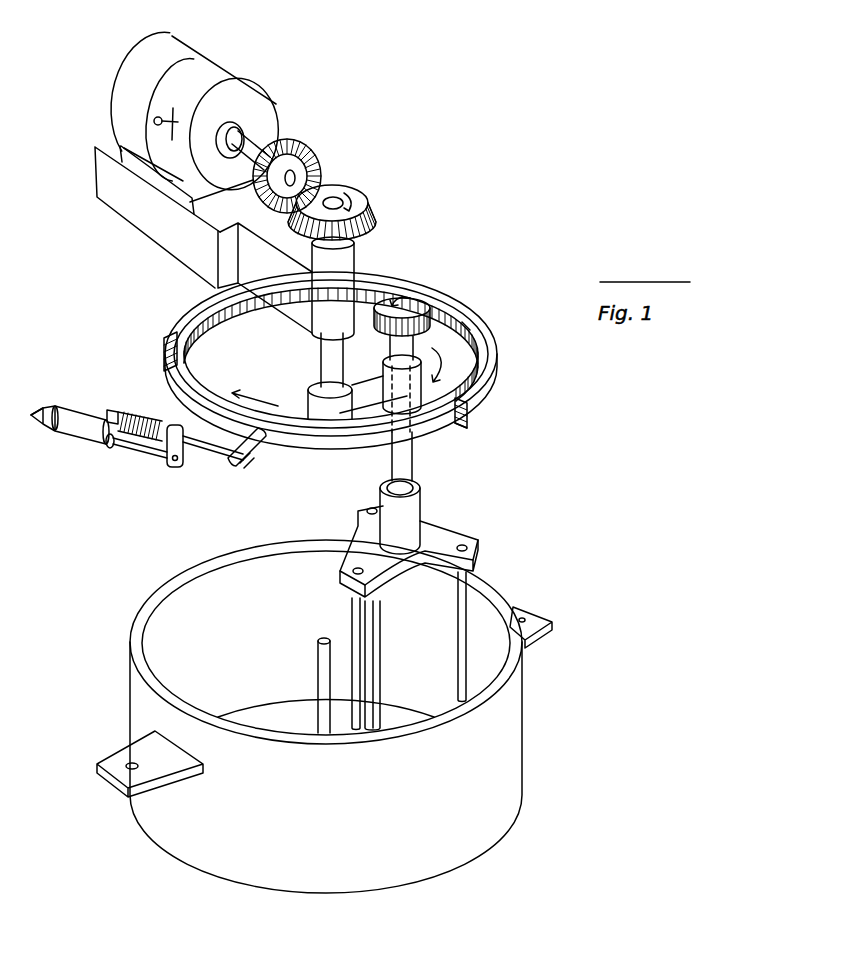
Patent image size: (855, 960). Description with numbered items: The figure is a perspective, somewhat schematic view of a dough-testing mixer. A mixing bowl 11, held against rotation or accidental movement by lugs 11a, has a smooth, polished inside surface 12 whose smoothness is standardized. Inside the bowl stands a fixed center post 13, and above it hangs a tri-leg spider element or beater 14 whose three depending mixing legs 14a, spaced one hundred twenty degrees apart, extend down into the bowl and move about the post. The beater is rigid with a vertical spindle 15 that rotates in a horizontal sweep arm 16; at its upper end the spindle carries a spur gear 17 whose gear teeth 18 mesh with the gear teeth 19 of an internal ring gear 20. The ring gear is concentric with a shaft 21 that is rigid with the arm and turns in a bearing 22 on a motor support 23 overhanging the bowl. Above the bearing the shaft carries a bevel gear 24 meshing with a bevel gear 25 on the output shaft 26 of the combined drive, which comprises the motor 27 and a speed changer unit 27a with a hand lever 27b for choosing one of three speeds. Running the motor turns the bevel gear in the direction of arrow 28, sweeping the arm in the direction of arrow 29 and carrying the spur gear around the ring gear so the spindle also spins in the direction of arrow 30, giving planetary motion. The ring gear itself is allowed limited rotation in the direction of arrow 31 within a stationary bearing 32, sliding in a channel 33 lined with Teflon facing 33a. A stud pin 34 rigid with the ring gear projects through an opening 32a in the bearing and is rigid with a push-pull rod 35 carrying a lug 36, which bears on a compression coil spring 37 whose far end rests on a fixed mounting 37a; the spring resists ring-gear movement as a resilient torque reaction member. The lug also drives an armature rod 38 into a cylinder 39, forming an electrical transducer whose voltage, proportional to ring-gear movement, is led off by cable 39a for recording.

The mixing bowl 11 is at (510, 741).
The lugs 11a is at (553, 620).
The inside surface 12 is at (165, 607).
The center post 13 is at (318, 668).
The spider element 14 is at (445, 538).
The mixing legs 14a is at (457, 616).
The spindle 15 is at (408, 457).
The sweep arm 16 is at (367, 378).
The spur gear 17 is at (421, 303).
The gear teeth 18 is at (452, 316).
The gear teeth 19 is at (466, 326).
The internal ring gear 20 is at (343, 448).
The shaft 21 is at (320, 345).
The bearing 22 is at (356, 256).
The motor support 23 is at (290, 289).
The bevel gear 24 is at (372, 213).
The bevel gear 25 is at (303, 148).
The output shaft 26 is at (253, 155).
The motor 27 is at (178, 45).
The speed changer unit 27a is at (228, 82).
The hand lever 27b is at (154, 121).
The arrow 28 is at (347, 192).
The arrow 29 is at (445, 360).
The arrow 30 is at (405, 292).
The arrow 31 is at (253, 390).
The bearing 32 is at (177, 310).
The opening 32a is at (465, 431).
The channel 33 is at (468, 410).
The lining 33a is at (162, 352).
The stud pin 34 is at (252, 450).
The push-pull rod 35 is at (215, 456).
The lug 36 is at (168, 463).
The compression coil spring 37 is at (142, 417).
The mounting 37a is at (113, 410).
The armature rod 38 is at (129, 447).
The cylinder 39 is at (78, 430).
The cable 39a is at (63, 402).